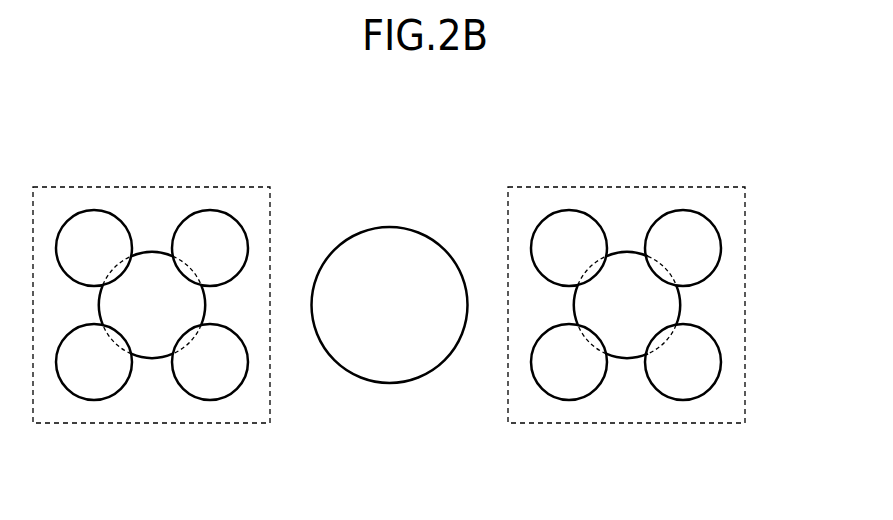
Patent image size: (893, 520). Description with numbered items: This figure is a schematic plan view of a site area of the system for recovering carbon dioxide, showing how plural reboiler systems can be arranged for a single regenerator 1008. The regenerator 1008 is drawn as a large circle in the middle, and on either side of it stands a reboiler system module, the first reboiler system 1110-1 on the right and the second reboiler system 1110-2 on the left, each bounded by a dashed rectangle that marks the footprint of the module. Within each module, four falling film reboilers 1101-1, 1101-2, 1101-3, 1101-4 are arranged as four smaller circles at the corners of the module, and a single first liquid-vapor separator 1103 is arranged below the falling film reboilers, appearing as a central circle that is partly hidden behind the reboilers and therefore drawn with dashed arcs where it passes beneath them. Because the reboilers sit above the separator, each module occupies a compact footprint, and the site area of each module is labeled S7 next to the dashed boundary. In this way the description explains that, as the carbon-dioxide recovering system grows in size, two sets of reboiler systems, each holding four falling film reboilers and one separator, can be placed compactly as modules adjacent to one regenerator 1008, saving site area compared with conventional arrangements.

The regenerator 1008 is at (390, 227).
The falling film reboiler 1101-1 is at (92, 210).
The falling film reboiler 1101-2 is at (248, 239).
The falling film reboiler 1101-3 is at (92, 400).
The falling film reboiler 1101-4 is at (246, 385).
The first liquid-vapor separator 1103 is at (150, 360).
The reboiler system 1110-1 is at (678, 183).
The reboiler system 1110-2 is at (203, 183).
The site area S7 is at (172, 423).